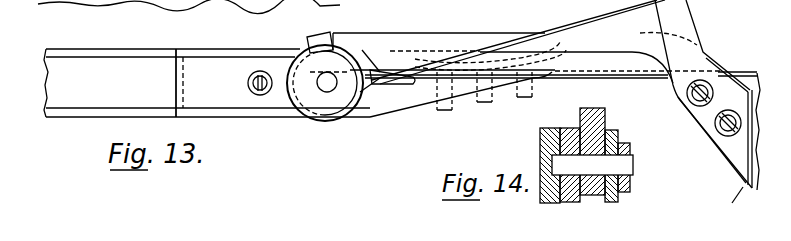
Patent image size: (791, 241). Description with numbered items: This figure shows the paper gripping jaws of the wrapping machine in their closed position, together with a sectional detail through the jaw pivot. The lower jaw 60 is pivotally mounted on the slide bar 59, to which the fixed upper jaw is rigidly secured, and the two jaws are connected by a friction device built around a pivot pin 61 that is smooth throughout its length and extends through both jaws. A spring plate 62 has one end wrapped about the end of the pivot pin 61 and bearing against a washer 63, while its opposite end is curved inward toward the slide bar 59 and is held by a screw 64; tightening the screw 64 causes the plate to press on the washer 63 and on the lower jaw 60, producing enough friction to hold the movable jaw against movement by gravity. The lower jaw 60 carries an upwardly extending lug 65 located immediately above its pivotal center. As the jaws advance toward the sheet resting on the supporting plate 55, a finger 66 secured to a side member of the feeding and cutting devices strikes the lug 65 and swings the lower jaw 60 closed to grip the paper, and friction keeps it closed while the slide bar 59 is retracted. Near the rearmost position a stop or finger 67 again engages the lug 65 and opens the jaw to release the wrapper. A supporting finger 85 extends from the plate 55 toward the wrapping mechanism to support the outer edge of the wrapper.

In FIG. 13, the supporting plate 55 is at (740, 72).
In FIG. 13, the slide bar 59 is at (78, 93).
In FIG. 14, the slide bar 59 is at (551, 204).
In FIG. 13, the lower jaw 60 is at (398, 103).
In FIG. 13, the pivot pin 61 is at (324, 92).
In FIG. 14, the pivot pin 61 is at (632, 165).
In FIG. 13, the spring plate 62 is at (238, 98).
In FIG. 14, the spring plate 62 is at (628, 193).
In FIG. 13, the washer 63 is at (345, 108).
In FIG. 14, the washer 63 is at (614, 203).
In FIG. 13, the screw 64 is at (268, 95).
In FIG. 13, the lug 65 is at (320, 45).
In FIG. 14, the lug 65 is at (600, 122).
In FIG. 13, the finger 66 is at (465, 36).
In FIG. 13, the stop or finger 67 is at (598, 20).
In FIG. 13, the supporting finger 85 is at (374, 69).